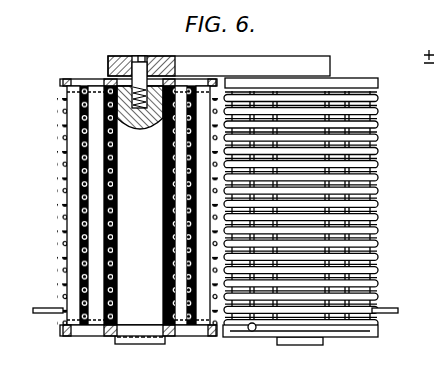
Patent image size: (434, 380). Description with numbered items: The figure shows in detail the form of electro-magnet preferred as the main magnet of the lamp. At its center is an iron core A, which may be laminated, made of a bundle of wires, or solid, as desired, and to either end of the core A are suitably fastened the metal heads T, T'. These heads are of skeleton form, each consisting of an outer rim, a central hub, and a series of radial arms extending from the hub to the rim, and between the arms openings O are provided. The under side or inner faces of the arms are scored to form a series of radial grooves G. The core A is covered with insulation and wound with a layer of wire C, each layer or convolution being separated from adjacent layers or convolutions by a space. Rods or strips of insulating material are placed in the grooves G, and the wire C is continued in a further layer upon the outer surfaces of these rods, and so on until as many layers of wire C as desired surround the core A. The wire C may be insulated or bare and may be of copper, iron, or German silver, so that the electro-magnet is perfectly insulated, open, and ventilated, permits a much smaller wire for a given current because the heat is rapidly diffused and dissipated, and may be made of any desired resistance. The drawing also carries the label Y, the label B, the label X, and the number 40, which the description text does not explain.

The vibrator / coil assembly 40 is at (214, 210).
The top plate Y is at (219, 64).
The upper end plate T' is at (138, 70).
The lower end plate T is at (219, 221).
The insulating tubes O is at (183, 352).
The core bars B is at (160, 187).
The coil windings C is at (227, 95).
The central core A is at (298, 355).
The terminal bars X is at (62, 329).
The terminal loop G is at (250, 330).